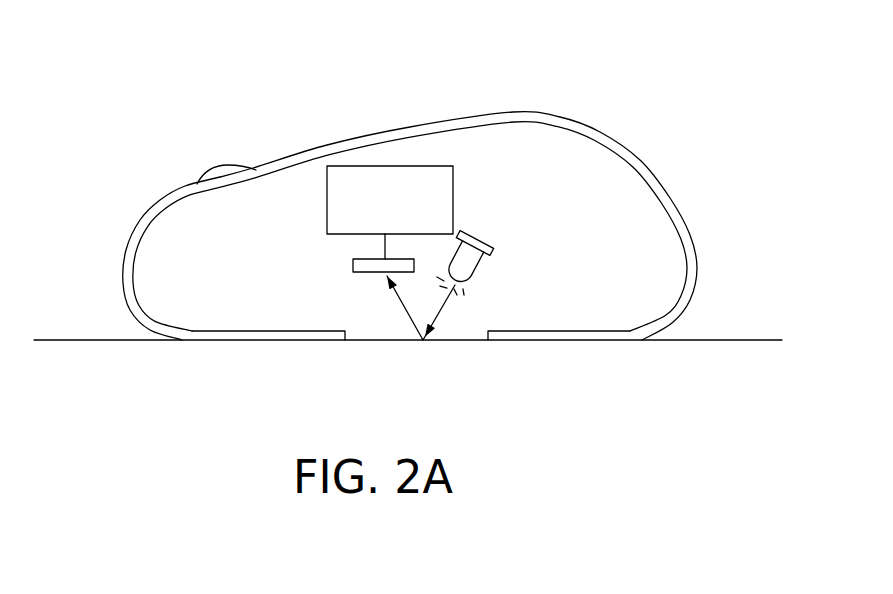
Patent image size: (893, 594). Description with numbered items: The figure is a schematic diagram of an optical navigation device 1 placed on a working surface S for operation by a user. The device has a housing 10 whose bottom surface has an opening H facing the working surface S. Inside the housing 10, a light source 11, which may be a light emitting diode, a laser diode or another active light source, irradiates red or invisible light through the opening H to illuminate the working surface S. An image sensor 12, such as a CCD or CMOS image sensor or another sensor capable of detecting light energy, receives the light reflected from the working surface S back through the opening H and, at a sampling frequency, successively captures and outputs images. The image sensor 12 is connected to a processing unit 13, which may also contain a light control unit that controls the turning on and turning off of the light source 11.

The optical navigation device 1 is at (598, 105).
The housing 10 is at (615, 145).
The light source 11 is at (463, 234).
The image sensor 12 is at (372, 272).
The processing unit 13 is at (395, 166).
The opening H is at (465, 333).
The working surface S is at (743, 339).